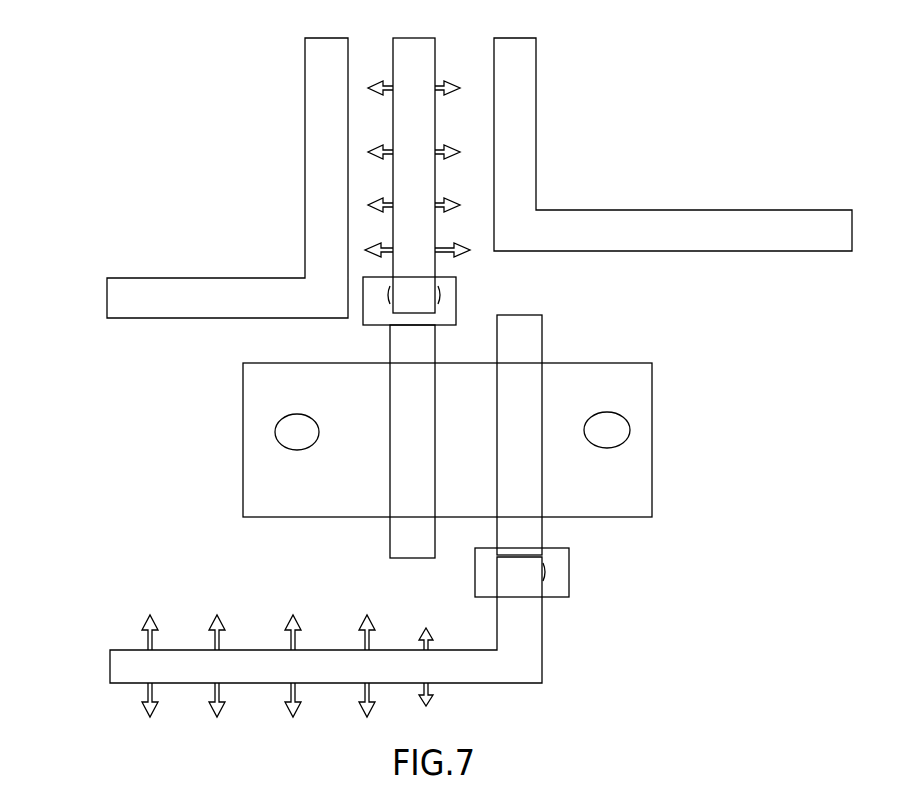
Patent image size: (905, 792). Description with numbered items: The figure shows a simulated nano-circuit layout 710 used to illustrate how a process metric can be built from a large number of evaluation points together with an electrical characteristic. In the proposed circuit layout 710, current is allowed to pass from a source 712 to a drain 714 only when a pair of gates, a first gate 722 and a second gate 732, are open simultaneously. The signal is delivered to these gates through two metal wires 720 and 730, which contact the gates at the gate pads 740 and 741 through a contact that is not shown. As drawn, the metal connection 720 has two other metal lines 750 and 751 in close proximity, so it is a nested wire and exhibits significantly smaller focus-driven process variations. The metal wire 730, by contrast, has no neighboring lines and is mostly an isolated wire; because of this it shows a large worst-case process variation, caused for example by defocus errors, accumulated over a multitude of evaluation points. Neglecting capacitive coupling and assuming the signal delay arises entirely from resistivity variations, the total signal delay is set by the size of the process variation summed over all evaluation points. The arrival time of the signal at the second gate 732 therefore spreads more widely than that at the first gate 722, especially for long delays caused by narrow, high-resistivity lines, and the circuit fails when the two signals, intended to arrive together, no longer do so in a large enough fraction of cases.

The proposed circuit layout 710 is at (95, 228).
The source 712 is at (275, 431).
The drain 714 is at (630, 429).
The metal wire 720 is at (462, 34).
The first gate 722 is at (390, 521).
The metal wire 730 is at (542, 617).
The second gate 732 is at (542, 343).
The gate pad 740 is at (457, 298).
The gate pad 741 is at (552, 548).
The neighboring metal line 750 is at (536, 99).
The neighboring metal line 751 is at (305, 140).